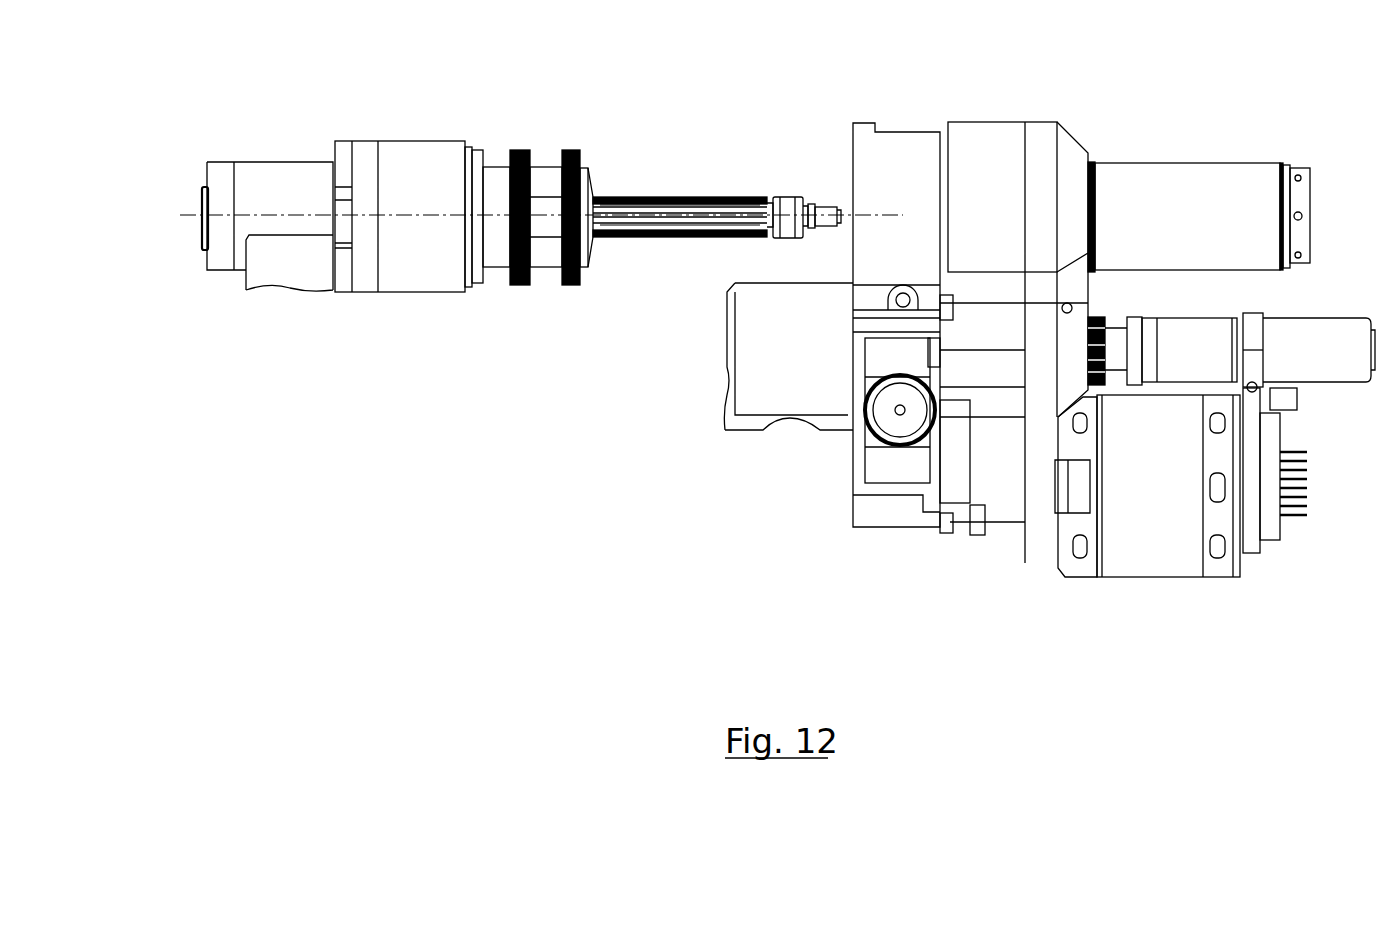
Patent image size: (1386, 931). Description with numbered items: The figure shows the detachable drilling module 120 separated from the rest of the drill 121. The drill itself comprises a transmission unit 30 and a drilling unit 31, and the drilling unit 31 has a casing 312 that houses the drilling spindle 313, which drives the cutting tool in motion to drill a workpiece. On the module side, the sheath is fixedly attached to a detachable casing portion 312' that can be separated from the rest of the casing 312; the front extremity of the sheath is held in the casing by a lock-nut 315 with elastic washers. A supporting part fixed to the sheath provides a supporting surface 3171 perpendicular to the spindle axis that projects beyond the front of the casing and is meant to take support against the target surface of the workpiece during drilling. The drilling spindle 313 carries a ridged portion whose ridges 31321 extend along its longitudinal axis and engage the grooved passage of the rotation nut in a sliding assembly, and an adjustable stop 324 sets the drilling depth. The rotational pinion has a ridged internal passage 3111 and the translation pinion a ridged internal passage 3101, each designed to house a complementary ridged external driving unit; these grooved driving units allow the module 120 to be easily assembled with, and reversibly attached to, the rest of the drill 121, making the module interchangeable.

The supporting surface 3171 is at (203, 192).
The lock-nut 315 is at (218, 167).
The detachable casing portion 312' is at (409, 166).
The ridged internal passage 3101 is at (521, 150).
The ridged internal passage 3111 is at (572, 150).
The drilling spindle 313 is at (706, 197).
The ridges 31321 is at (673, 228).
The adjustable stop 324 is at (792, 197).
The casing 312 is at (970, 298).
The drilling unit 31 is at (1105, 140).
The transmission unit 30 is at (1005, 562).
The detachable drilling module 120 is at (400, 330).
The rest of the drill 121 is at (730, 463).